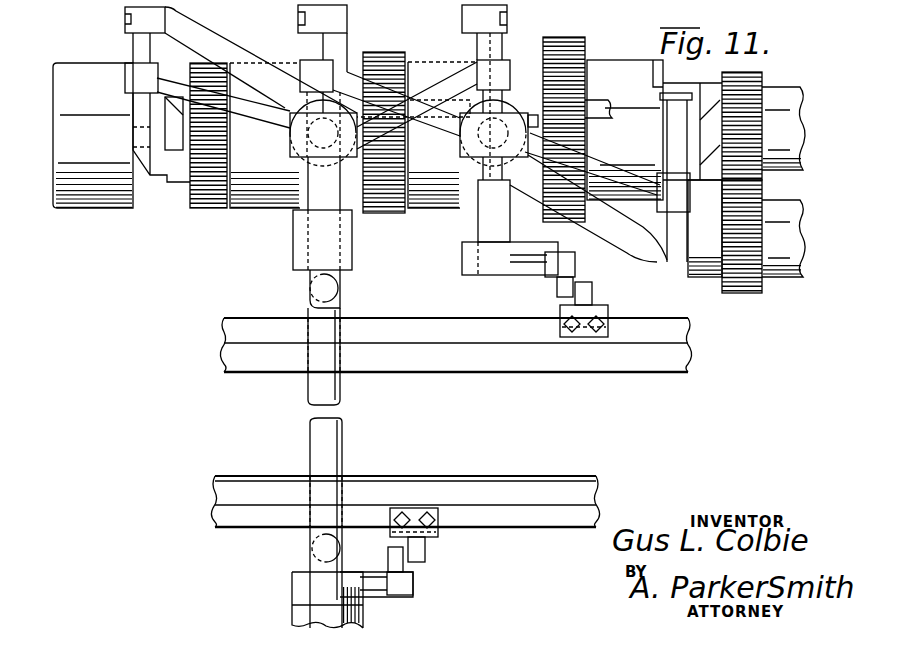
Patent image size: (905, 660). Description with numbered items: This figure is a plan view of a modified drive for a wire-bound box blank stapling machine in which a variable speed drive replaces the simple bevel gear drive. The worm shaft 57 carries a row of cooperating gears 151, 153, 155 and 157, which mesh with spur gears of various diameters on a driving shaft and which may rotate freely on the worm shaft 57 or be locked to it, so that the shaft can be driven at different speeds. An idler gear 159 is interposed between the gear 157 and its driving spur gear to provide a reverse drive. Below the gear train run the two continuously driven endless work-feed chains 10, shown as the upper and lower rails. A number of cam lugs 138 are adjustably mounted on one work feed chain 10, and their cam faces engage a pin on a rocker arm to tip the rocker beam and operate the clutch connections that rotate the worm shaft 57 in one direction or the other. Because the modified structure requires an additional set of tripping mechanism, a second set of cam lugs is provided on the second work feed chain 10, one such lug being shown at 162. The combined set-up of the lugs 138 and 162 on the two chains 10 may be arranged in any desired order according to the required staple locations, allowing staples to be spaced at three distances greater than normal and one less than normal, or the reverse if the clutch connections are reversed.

The work-feed chain 10 is at (520, 364).
The worm shaft 57 is at (814, 122).
The cam lug 138 is at (603, 307).
The cooperating gear 151 is at (210, 208).
The cooperating gear 153 is at (390, 212).
The cooperating gear 155 is at (558, 224).
The cooperating gear 157 is at (753, 78).
The idler gear 159 is at (747, 293).
The cam lug 162 is at (440, 537).